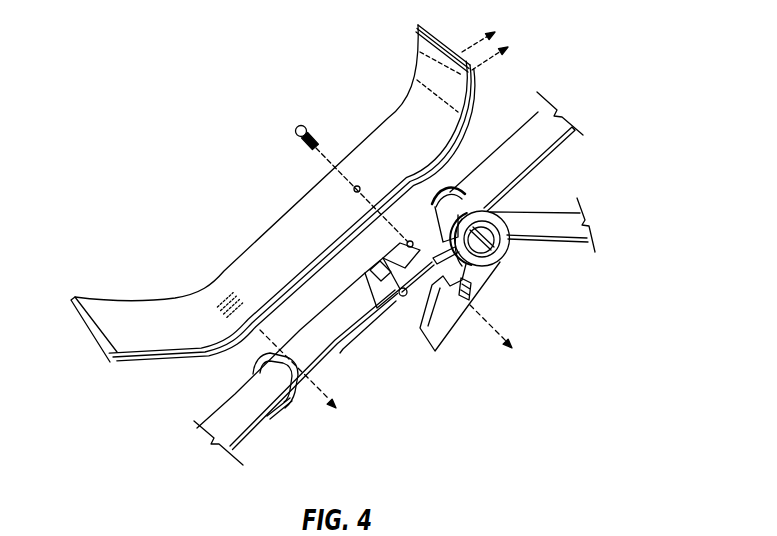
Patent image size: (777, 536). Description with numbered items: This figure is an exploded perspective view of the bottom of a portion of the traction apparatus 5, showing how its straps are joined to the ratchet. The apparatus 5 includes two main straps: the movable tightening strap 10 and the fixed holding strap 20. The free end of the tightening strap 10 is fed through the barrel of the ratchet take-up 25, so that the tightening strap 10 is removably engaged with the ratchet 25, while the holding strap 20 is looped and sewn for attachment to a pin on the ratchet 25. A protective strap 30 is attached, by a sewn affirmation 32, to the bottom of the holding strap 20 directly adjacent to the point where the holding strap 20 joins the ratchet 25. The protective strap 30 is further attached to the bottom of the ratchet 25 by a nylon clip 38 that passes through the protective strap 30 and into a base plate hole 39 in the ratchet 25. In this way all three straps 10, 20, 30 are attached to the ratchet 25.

The apparatus 5 is at (366, 245).
The tightening strap 10 is at (539, 130).
The holding strap 20 is at (256, 410).
The ratchet take-up 25 is at (485, 265).
The protective strap 30 is at (124, 310).
The sewn affirmation 32 is at (222, 289).
The nylon clip 38 is at (299, 126).
The base plate hole 39 is at (407, 241).